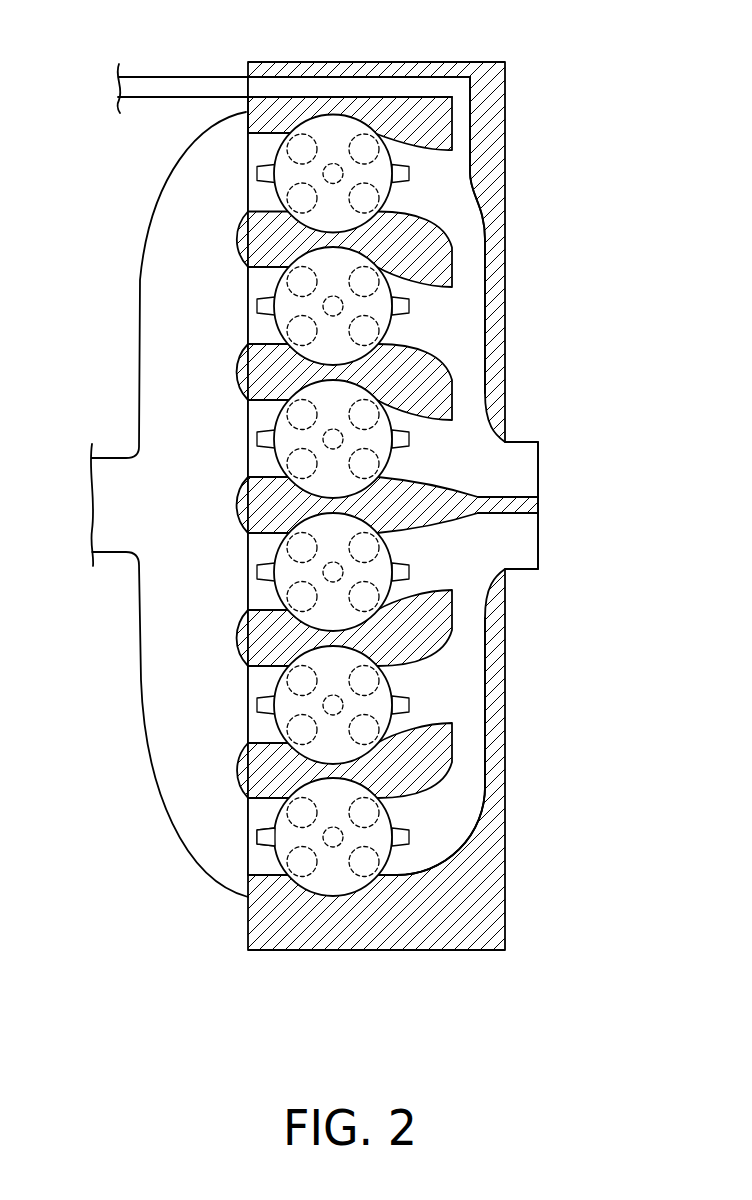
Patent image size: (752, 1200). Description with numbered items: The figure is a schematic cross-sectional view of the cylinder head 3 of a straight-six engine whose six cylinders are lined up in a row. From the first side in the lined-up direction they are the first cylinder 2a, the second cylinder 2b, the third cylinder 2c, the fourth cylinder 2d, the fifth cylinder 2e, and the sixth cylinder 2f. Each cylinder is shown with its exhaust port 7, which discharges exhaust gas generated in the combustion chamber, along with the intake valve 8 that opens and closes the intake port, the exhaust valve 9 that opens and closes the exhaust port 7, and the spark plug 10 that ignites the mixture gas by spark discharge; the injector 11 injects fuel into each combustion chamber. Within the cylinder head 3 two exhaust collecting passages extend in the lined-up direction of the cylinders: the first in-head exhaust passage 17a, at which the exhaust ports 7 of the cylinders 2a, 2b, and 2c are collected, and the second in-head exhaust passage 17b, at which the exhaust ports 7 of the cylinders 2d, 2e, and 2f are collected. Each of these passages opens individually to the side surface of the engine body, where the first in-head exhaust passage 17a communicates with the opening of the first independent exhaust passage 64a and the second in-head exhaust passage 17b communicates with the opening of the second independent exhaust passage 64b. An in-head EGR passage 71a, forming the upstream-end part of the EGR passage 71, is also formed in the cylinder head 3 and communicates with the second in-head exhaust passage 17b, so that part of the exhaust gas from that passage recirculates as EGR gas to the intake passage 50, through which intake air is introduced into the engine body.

The first cylinder 2a is at (305, 790).
The second cylinder 2b is at (272, 682).
The third cylinder 2c is at (272, 548).
The fourth cylinder 2d is at (272, 418).
The fifth cylinder 2e is at (272, 285).
The sixth cylinder 2f is at (274, 191).
The cylinder head 3 is at (507, 86).
The exhaust port 7 is at (400, 812).
The intake valve 8 is at (292, 868).
The exhaust valve 9 is at (378, 866).
The spark plug 10 is at (335, 848).
The injector 11 is at (257, 858).
The first in-head exhaust passage 17a is at (466, 748).
The second in-head exhaust passage 17b is at (468, 250).
The intake passage 50 is at (156, 632).
The first independent exhaust passage 64a is at (538, 569).
The second independent exhaust passage 64b is at (538, 442).
The EGR passage 71 is at (163, 77).
The in-head EGR passage 71a is at (360, 62).